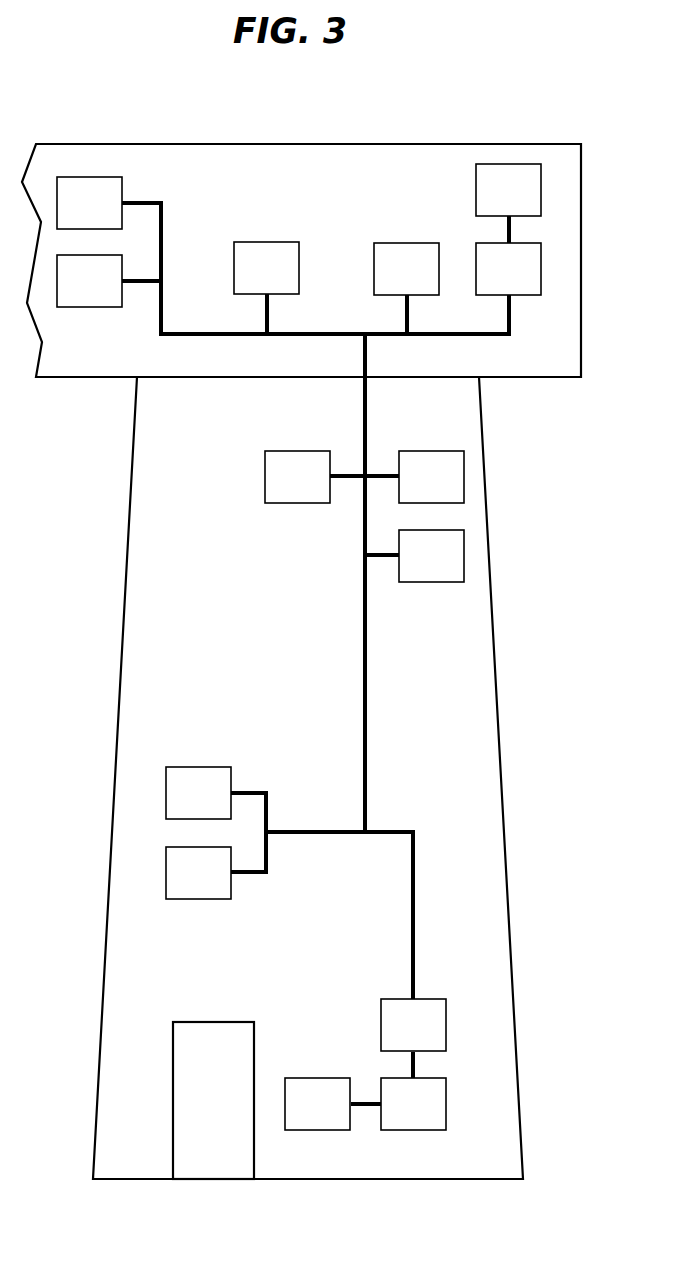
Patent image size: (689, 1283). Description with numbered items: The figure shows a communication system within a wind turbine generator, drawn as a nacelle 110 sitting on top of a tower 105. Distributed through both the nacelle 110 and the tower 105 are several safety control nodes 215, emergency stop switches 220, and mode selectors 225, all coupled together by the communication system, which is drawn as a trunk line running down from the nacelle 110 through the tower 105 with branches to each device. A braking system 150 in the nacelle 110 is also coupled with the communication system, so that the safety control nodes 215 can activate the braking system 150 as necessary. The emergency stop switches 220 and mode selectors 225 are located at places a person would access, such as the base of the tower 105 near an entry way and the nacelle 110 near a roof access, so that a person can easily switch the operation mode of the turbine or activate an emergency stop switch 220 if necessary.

The nacelle 110 is at (423, 122).
The tower 105 is at (522, 706).
The braking system 150 is at (282, 278).
The safety control node 215 is at (106, 214).
The emergency stop switch 220 is at (106, 292).
The mode selector 225 is at (422, 280).